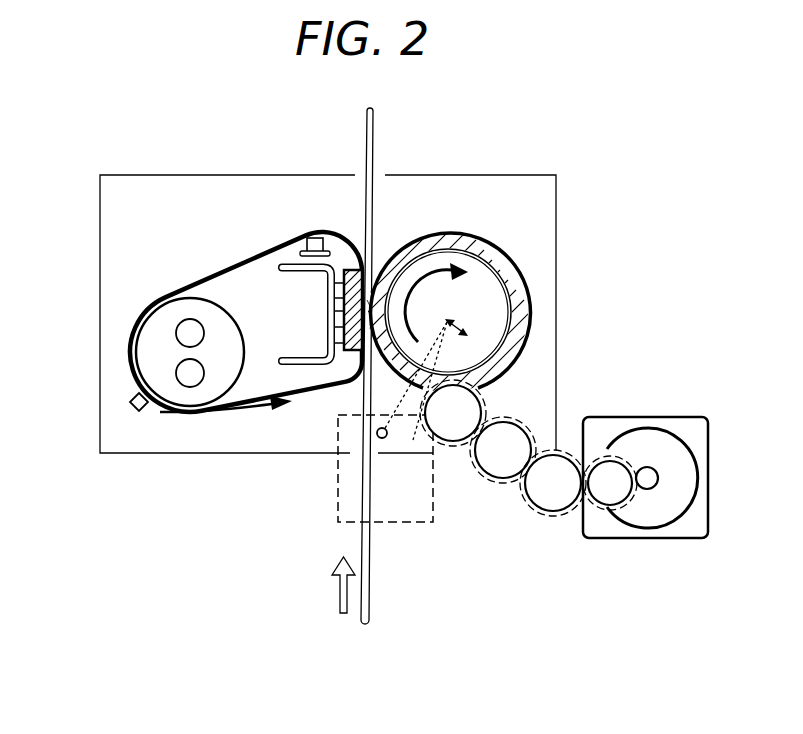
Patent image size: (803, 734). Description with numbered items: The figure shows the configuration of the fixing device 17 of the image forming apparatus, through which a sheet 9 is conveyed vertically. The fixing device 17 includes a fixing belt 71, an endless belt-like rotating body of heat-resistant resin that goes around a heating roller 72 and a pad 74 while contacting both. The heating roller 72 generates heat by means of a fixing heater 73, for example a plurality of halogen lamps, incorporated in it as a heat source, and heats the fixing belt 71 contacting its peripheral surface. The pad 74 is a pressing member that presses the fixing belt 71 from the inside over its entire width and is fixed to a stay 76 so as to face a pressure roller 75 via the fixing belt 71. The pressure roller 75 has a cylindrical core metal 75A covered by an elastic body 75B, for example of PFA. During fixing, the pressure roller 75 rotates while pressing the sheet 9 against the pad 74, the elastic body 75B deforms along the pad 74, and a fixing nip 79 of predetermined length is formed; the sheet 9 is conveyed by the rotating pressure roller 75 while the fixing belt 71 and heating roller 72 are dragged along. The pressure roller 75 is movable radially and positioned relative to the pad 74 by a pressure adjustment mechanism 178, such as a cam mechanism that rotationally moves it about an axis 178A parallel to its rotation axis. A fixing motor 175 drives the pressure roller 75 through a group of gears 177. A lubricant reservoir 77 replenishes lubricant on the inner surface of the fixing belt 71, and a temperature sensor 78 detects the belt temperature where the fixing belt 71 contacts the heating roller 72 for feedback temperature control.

The sheet 9 is at (373, 138).
The fixing device 17 is at (235, 175).
The fixing belt 71 is at (240, 266).
The heating roller 72 is at (202, 302).
The fixing heater 73 is at (176, 369).
The pad 74 is at (336, 310).
The pressure roller 75 is at (534, 281).
The core metal 75A is at (488, 268).
The elastic body 75B is at (464, 238).
The stay 76 is at (328, 338).
The lubricant reservoir 77 is at (312, 237).
The temperature sensor 78 is at (130, 410).
The fixing nip 79 is at (370, 302).
The fixing motor 175 is at (648, 417).
The group of gears 177 is at (493, 506).
The pressure adjustment mechanism 178 is at (338, 490).
The axis 178A is at (383, 440).